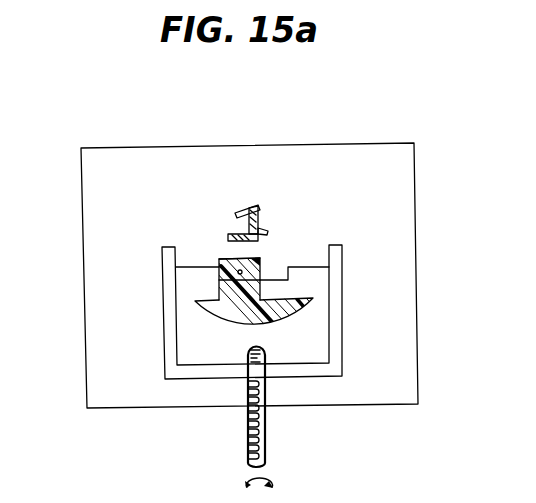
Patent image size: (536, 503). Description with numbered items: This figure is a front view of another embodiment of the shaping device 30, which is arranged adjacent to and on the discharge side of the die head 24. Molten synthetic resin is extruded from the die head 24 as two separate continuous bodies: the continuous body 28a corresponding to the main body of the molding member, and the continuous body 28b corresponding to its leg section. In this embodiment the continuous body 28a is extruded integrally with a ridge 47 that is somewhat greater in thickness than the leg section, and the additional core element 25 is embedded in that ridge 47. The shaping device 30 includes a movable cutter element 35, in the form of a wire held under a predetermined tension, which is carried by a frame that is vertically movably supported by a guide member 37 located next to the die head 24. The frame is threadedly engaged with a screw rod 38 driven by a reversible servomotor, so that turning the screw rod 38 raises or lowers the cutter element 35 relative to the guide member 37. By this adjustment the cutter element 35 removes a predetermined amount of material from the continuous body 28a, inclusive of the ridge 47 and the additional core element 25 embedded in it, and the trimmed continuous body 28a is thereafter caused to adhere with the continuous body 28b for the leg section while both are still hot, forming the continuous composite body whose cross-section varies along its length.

The die head 24 is at (418, 225).
The additional core element 25 is at (219, 260).
The continuous body for the main body 28a is at (218, 312).
The continuous body for the leg section 28b is at (228, 240).
The shaping device 30 is at (168, 236).
The cutter element 35 is at (315, 267).
The guide member 37 is at (336, 310).
The screw rod 38 is at (248, 437).
The ridge 47 is at (227, 290).